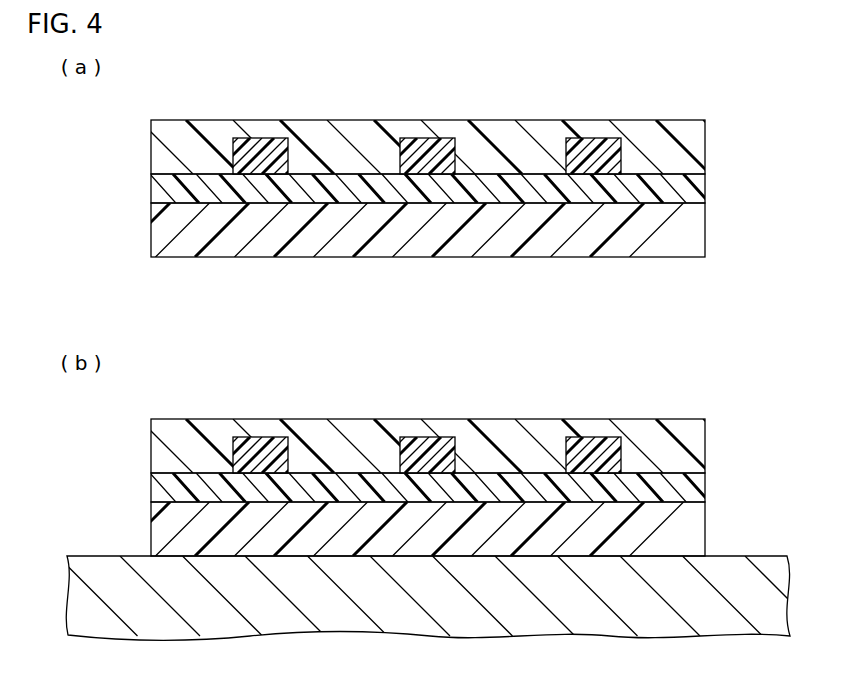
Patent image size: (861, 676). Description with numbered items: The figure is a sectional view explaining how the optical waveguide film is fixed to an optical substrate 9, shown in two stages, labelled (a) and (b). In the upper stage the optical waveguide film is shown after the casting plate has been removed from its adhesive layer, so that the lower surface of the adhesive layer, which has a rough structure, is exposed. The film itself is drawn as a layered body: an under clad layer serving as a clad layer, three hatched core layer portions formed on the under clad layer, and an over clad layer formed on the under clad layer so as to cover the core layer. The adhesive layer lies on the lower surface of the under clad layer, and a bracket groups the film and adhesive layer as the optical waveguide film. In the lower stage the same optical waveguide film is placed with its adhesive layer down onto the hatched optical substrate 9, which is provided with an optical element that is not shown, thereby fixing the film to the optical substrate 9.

The optical substrate 9 is at (732, 556).